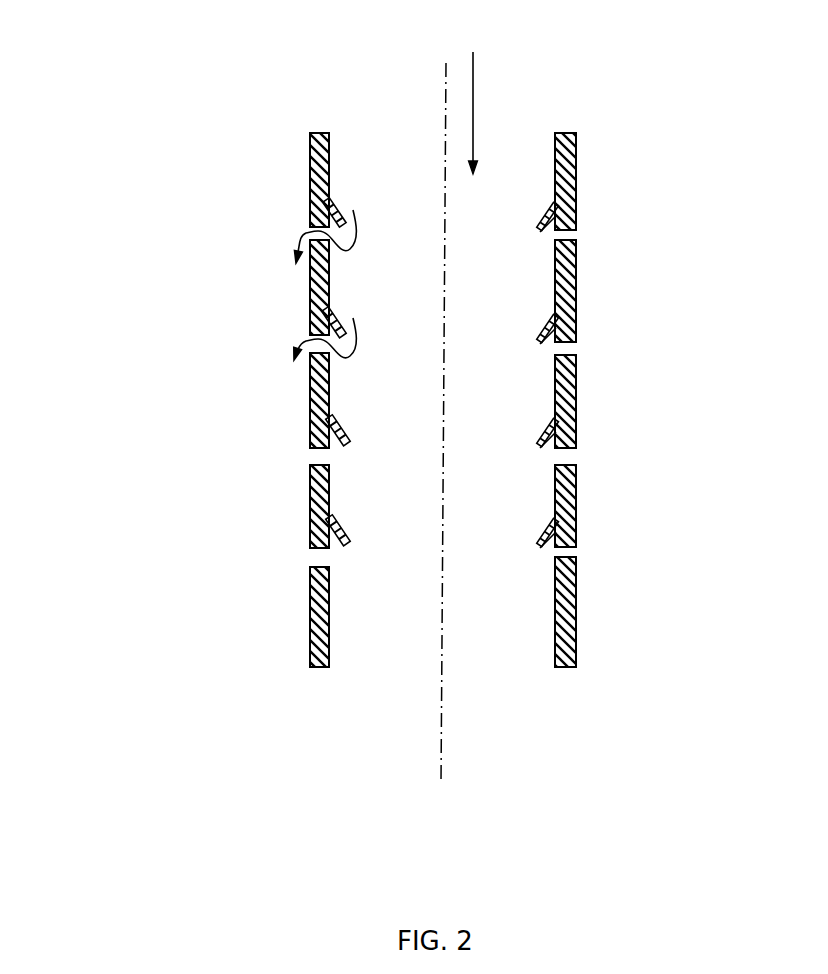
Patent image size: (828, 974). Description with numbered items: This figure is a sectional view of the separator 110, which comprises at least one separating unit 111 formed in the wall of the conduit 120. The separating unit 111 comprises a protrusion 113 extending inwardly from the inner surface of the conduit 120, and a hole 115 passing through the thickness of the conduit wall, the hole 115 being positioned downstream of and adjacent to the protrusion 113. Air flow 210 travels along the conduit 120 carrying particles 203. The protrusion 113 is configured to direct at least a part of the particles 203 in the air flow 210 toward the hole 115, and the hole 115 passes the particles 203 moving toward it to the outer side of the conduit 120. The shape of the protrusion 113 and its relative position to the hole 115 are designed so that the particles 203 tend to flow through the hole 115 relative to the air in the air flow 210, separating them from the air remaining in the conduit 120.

The separator 110 is at (182, 70).
The separating unit 111 is at (272, 165).
The protrusion 113 is at (336, 215).
The hole 115 is at (298, 225).
The conduit 120 is at (570, 166).
The particles 203 is at (304, 234).
The air flow 210 is at (474, 122).